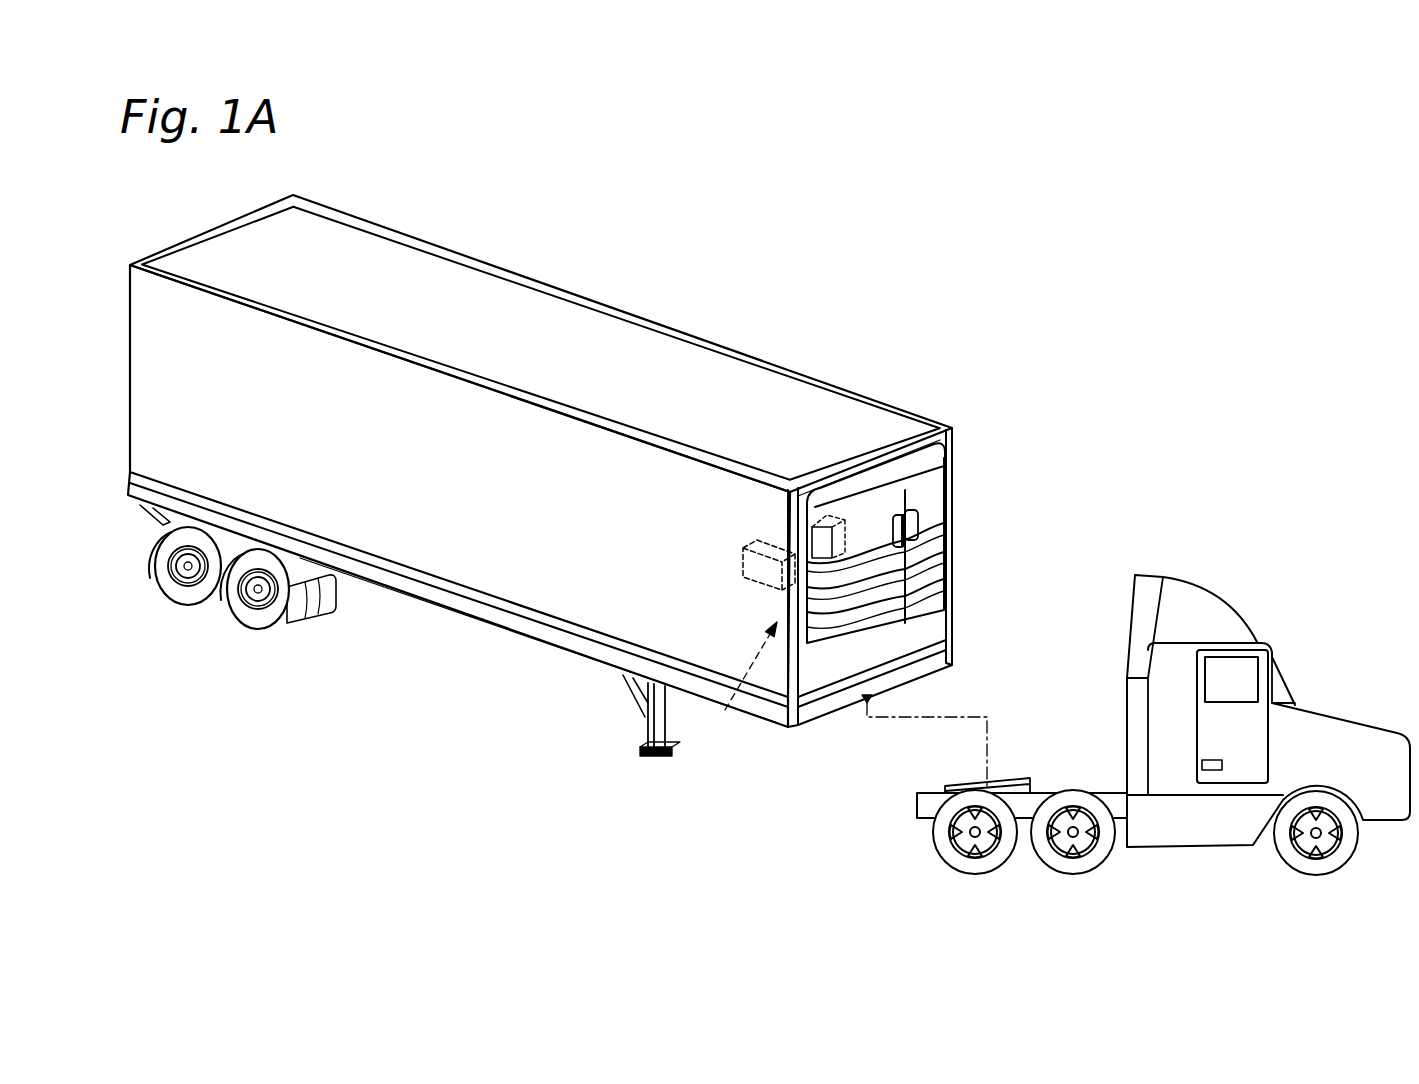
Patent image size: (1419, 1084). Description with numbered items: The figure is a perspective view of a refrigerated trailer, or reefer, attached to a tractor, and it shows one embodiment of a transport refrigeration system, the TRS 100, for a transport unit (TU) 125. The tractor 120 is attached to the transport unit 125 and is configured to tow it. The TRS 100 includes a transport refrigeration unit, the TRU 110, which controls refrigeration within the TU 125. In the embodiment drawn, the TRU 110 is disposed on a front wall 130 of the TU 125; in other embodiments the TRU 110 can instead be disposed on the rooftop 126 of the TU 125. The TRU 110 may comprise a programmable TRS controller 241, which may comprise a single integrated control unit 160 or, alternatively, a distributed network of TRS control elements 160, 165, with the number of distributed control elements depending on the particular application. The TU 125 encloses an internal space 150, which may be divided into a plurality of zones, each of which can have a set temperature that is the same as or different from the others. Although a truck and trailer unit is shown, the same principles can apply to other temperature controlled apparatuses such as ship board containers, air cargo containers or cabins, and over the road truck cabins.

The transport refrigeration system (TRS) 100 is at (1037, 264).
The transport refrigeration unit (TRU) 110 is at (933, 497).
The tractor 120 is at (1333, 715).
The transport unit (TU) 125 is at (680, 330).
The rooftop 126 is at (476, 295).
The front wall 130 is at (953, 433).
The internal space 150 is at (485, 518).
The integrated control unit 160 is at (822, 562).
The TRS control element 165 is at (645, 697).
The TRS controller 241 is at (752, 582).